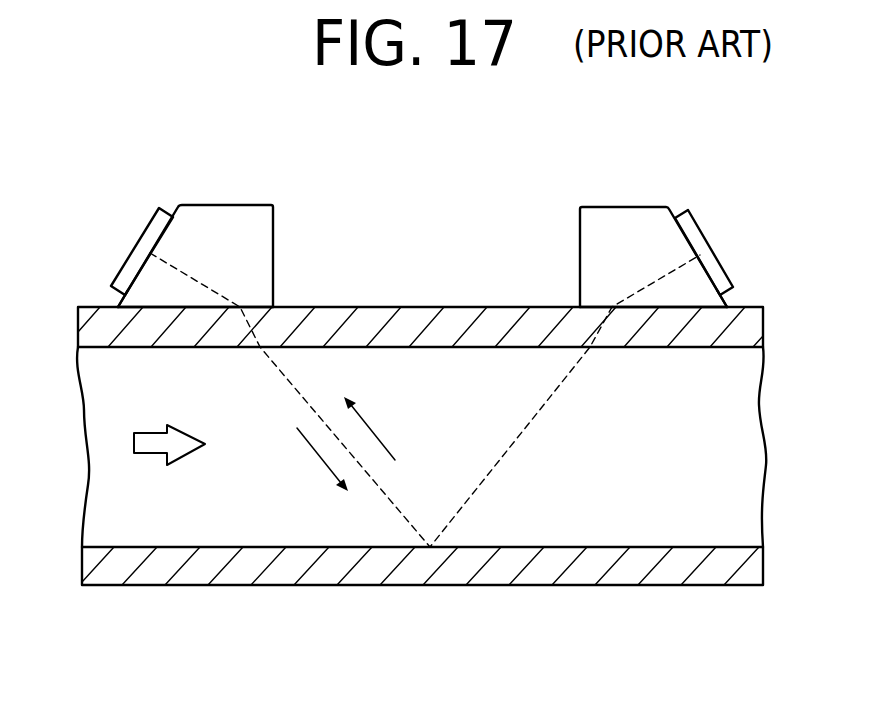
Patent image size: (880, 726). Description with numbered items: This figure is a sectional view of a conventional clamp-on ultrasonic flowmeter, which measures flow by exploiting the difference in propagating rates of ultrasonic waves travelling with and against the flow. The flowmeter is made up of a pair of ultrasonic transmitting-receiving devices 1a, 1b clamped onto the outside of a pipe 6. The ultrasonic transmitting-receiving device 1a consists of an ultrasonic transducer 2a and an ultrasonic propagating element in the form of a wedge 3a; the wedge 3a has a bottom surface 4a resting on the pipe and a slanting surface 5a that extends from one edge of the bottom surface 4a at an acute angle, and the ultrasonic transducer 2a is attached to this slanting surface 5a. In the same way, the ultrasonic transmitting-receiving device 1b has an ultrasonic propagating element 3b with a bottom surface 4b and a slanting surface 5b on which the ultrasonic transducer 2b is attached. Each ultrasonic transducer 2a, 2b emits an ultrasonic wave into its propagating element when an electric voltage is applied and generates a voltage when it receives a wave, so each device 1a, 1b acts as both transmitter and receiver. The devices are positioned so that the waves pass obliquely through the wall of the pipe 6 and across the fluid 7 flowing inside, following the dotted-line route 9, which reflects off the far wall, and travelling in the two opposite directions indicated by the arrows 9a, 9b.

The ultrasonic transmitting-receiving device 1a is at (187, 209).
The ultrasonic transmitting-receiving device 1b is at (655, 209).
The ultrasonic transducer 2a is at (143, 232).
The ultrasonic transducer 2b is at (700, 233).
The ultrasonic propagating element (wedge) 3a is at (260, 233).
The ultrasonic propagating element 3b is at (590, 232).
The bottom surface 4a is at (258, 307).
The bottom surface 4b is at (597, 307).
The slanting surface 5a is at (118, 298).
The slanting surface 5b is at (727, 298).
The pipe 6 is at (452, 325).
The fluid 7 is at (152, 455).
The route 9 is at (293, 386).
The arrow 9a is at (318, 455).
The arrow 9b is at (378, 440).